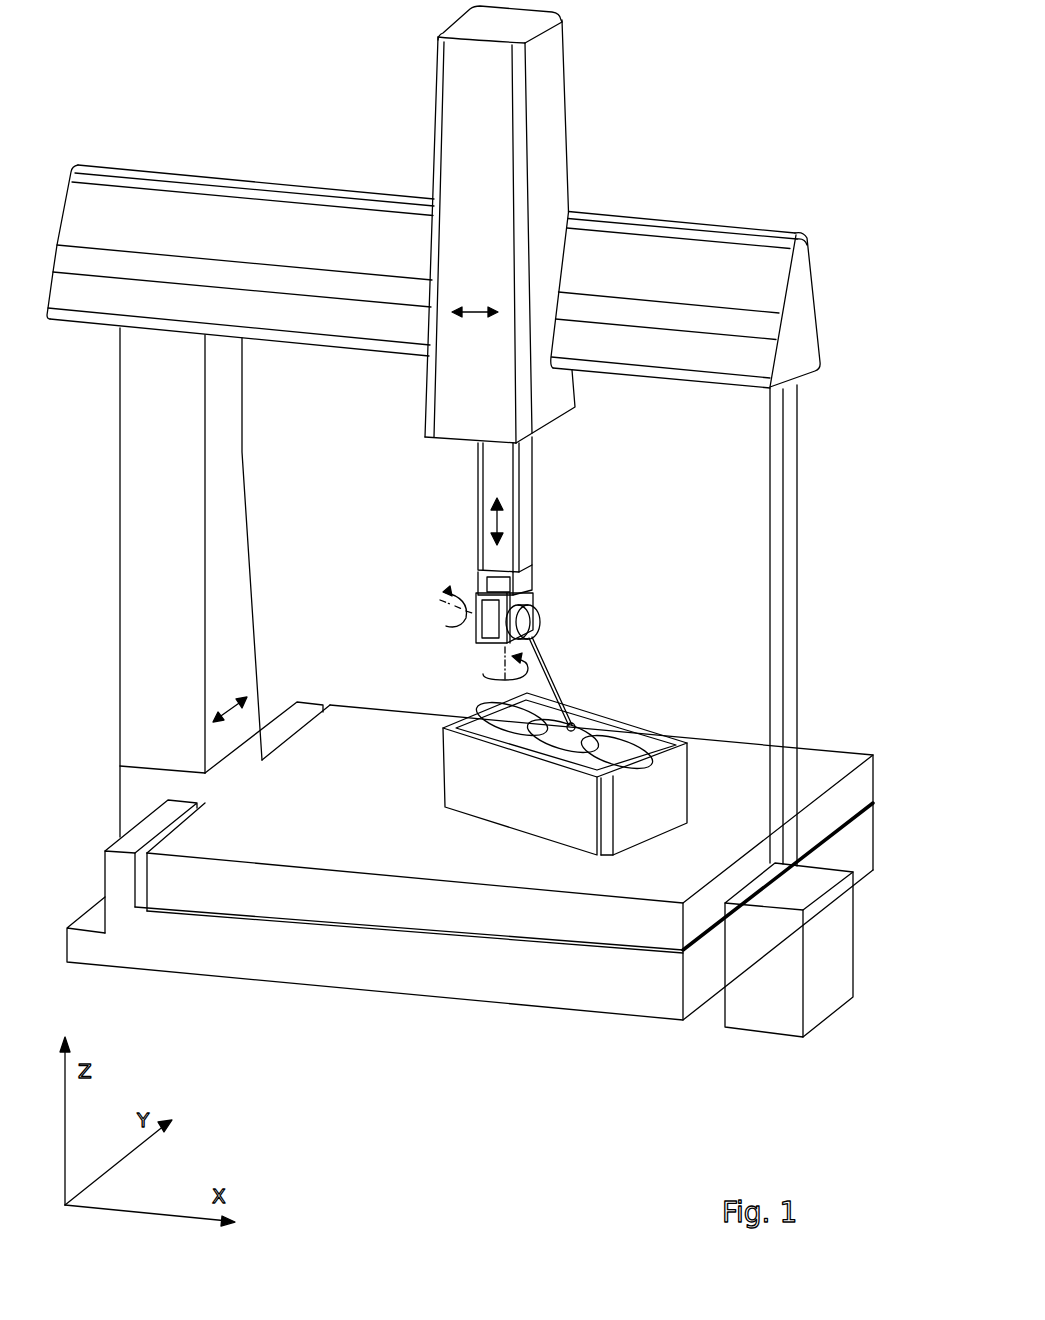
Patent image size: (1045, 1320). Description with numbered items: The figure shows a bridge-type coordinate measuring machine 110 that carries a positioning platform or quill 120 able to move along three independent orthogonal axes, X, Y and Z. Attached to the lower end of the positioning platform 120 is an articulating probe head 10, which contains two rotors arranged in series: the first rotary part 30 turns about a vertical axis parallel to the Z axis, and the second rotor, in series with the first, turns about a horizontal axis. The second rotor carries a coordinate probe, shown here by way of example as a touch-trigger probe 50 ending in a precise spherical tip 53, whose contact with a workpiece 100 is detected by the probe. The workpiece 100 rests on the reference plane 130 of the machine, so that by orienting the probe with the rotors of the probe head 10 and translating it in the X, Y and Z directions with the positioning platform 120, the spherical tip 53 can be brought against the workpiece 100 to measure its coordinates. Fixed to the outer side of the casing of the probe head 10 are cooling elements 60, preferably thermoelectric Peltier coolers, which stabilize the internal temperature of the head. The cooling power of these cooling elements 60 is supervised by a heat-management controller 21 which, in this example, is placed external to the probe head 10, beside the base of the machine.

The coordinate measuring machine 110 is at (163, 82).
The positioning platform 120 is at (478, 507).
The articulating probe head 10 is at (420, 582).
The cooling elements 60 is at (503, 585).
The first rotary part 30 is at (532, 580).
The touch-trigger probe 50 is at (593, 681).
The spherical tip 53 is at (577, 720).
The workpiece 100 is at (463, 755).
The reference plane 130 is at (817, 755).
The heat-management controller 21 is at (760, 1017).